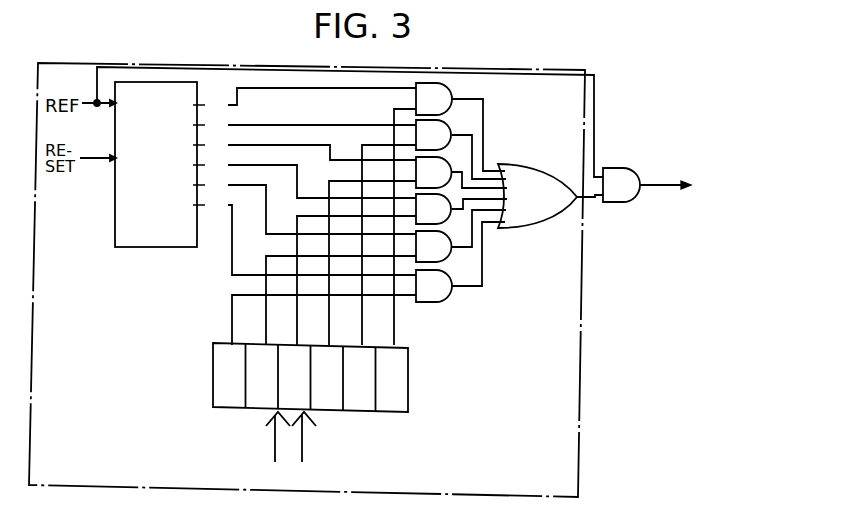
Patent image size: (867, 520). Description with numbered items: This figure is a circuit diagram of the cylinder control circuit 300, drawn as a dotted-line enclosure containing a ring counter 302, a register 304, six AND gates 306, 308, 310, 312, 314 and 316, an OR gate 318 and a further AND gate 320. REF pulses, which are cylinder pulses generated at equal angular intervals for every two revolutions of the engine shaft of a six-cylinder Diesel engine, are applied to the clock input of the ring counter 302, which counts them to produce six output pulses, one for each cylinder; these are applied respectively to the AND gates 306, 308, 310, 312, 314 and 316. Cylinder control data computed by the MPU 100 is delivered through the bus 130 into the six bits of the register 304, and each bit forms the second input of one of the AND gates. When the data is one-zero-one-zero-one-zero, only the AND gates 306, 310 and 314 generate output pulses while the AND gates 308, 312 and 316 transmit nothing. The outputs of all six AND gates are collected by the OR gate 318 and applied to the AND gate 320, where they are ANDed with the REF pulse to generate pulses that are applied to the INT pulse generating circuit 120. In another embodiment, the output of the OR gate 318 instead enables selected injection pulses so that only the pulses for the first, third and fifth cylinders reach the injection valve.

The cylinder control circuit 300 is at (582, 347).
The ring counter 302 is at (160, 248).
The register 304 is at (410, 388).
The AND gate 306 is at (458, 80).
The AND gate 308 is at (453, 127).
The AND gate 310 is at (452, 160).
The AND gate 312 is at (452, 223).
The AND gate 314 is at (448, 257).
The AND gate 316 is at (443, 302).
The OR gate 318 is at (534, 165).
The AND gate 320 is at (620, 168).
The INT pulse generating circuit 120 is at (711, 187).
The bus 130 is at (300, 441).
The MPU 100 is at (304, 474).